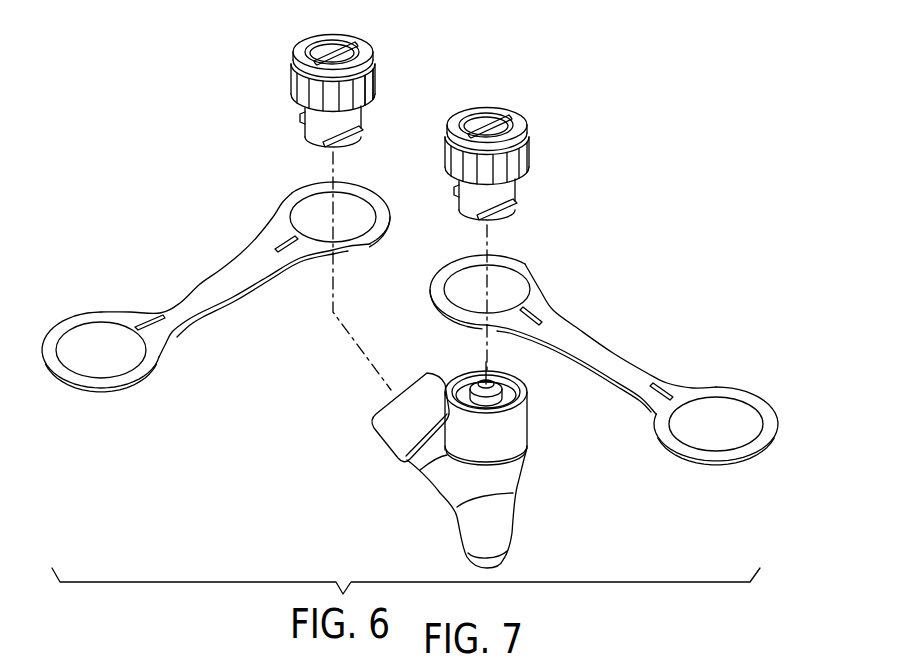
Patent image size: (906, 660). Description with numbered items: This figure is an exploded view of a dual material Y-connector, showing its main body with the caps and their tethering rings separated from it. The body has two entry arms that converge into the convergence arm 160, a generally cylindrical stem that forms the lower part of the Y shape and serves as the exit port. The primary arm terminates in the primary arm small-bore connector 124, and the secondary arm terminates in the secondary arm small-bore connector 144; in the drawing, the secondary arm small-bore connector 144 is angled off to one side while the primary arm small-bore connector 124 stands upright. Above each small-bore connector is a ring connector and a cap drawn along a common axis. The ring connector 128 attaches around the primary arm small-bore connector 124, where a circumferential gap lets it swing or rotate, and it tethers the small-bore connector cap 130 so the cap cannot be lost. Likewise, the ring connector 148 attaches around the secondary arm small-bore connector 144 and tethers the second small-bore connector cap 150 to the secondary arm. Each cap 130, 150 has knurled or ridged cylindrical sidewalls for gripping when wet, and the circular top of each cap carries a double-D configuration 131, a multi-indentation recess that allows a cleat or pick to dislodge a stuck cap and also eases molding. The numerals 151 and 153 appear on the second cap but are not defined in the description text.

The primary arm small-bore connector 124 is at (526, 423).
The ring connector 128 is at (588, 332).
The small-bore connector cap 130 is at (529, 150).
The double-D configuration 131 is at (484, 115).
The secondary arm small-bore connector 144 is at (390, 445).
The ring connector 148 is at (182, 290).
The second small-bore connector cap 150 is at (294, 74).
The slot 151 is at (322, 45).
The knurled grip 153 is at (364, 82).
The convergence arm 160 is at (518, 523).